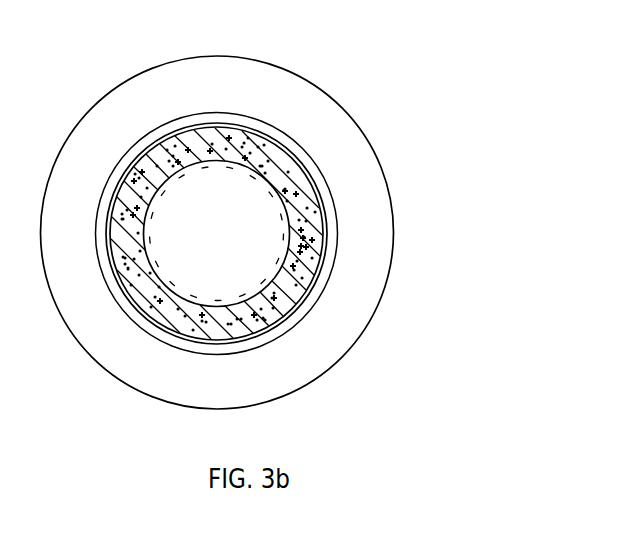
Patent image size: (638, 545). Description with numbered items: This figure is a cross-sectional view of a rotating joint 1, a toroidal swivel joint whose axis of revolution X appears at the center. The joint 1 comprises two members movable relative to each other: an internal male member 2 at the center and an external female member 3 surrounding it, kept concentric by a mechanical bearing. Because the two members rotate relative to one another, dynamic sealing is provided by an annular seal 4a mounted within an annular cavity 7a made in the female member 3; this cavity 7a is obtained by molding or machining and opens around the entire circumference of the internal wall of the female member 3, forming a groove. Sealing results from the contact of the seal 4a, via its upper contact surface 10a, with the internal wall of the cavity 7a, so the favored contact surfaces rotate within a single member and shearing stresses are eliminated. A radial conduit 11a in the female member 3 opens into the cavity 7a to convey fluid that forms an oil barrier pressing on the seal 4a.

The rotating joint 1 is at (280, 219).
The internal male member 2 is at (227, 171).
The external female member 3 is at (404, 181).
The annular seal 4a is at (295, 323).
The annular cavity 7a is at (335, 288).
The upper contact surface 10a is at (293, 160).
The radial conduit 11a is at (336, 251).